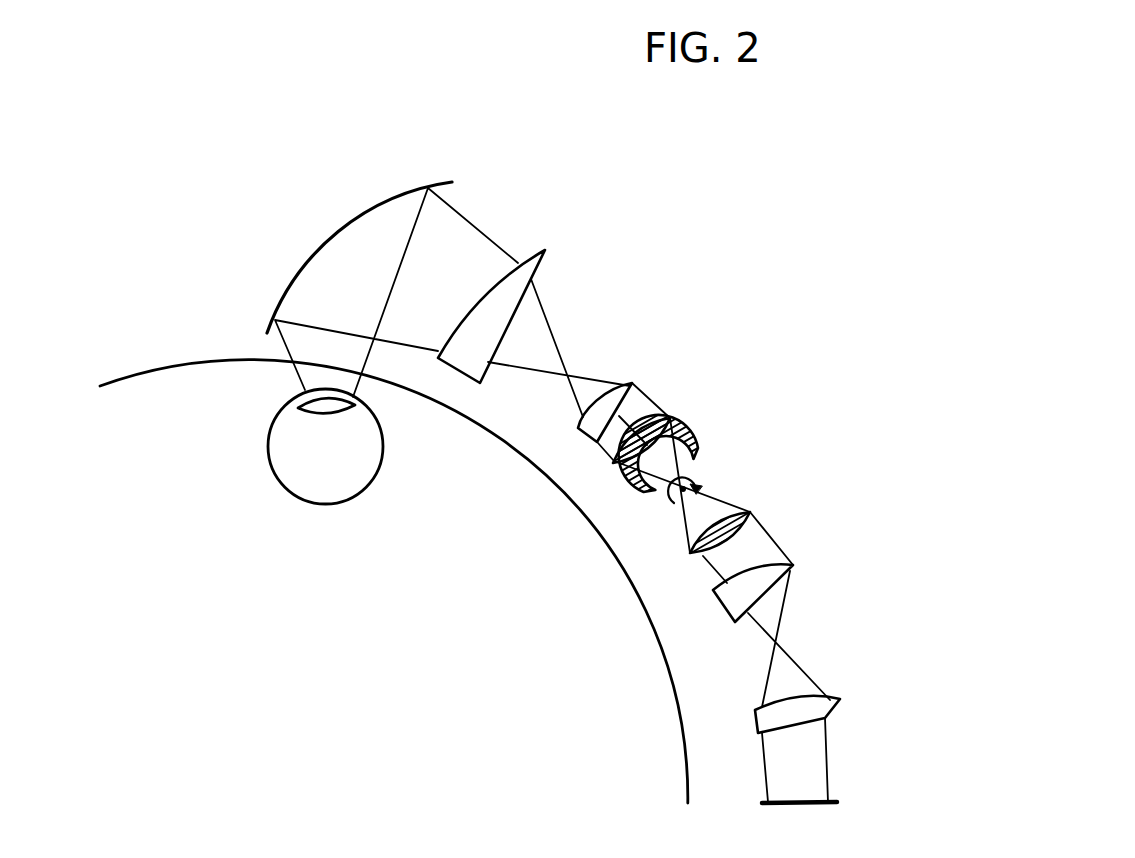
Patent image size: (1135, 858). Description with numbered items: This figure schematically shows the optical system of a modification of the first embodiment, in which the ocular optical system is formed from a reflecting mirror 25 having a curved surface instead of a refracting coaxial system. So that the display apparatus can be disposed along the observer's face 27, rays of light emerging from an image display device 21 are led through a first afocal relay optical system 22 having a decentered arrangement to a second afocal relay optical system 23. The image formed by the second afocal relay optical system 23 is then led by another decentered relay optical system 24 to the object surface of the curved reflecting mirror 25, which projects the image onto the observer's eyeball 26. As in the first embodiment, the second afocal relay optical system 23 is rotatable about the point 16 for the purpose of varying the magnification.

The point 16 is at (673, 507).
The image display device 21 is at (833, 795).
The first afocal relay optical system 22 is at (872, 704).
The second afocal relay optical system 23 is at (672, 393).
The decentered relay optical system 24 is at (538, 227).
The reflecting mirror 25 is at (413, 190).
The observer's eyeball 26 is at (272, 428).
The observer's face 27 is at (158, 368).